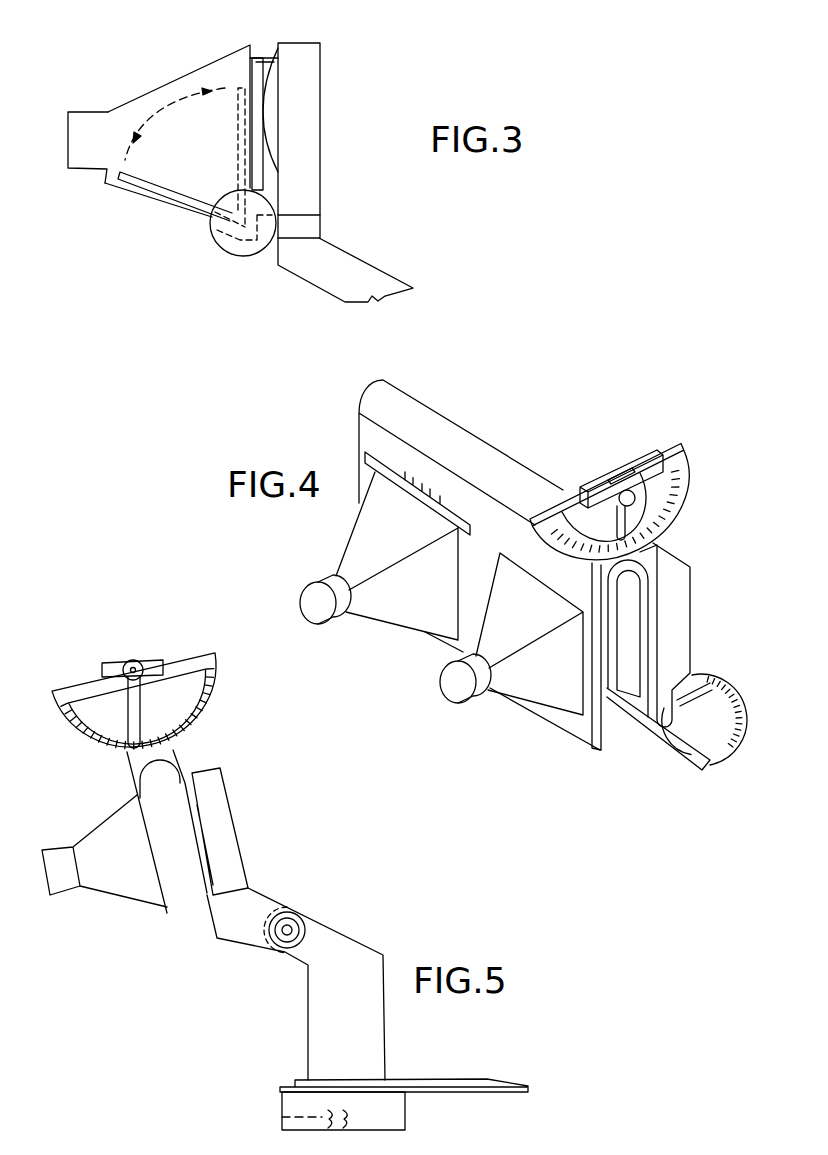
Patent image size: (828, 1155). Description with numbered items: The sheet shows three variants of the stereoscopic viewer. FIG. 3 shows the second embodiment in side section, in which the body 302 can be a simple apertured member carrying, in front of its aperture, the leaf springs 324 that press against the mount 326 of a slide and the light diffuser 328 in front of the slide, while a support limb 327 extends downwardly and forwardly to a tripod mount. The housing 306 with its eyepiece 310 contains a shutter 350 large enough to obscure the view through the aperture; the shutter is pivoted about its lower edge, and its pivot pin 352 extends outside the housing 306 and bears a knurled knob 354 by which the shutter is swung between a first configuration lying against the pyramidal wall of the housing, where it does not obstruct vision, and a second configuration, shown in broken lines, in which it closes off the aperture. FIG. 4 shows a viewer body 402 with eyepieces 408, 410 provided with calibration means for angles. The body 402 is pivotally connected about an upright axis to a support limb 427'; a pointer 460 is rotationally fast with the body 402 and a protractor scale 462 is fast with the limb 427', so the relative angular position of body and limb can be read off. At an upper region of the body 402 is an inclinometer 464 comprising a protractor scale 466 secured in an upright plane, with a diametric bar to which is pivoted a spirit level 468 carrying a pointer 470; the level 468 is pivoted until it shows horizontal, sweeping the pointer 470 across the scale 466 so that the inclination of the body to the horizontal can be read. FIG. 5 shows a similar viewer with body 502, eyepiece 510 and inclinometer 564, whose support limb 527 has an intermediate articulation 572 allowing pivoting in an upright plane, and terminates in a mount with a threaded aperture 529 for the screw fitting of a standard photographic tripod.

In FIG. 3, the body 302 is at (256, 56).
In FIG. 3, the housing 306 is at (150, 93).
In FIG. 3, the eyepiece 310 is at (85, 170).
In FIG. 3, the leaf springs 324 is at (265, 148).
In FIG. 3, the mount 326 is at (260, 57).
In FIG. 3, the support limb 327 is at (377, 282).
In FIG. 3, the light diffuser 328 is at (320, 78).
In FIG. 3, the shutter 350 is at (148, 187).
In FIG. 3, the pivot pin 352 is at (246, 225).
In FIG. 3, the knurled knob 354 is at (213, 238).
In FIG. 4, the viewer body 402 is at (372, 384).
In FIG. 4, the eyepiece 408 is at (303, 590).
In FIG. 4, the eyepiece 410 is at (473, 700).
In FIG. 4, the support limb 427' is at (718, 741).
In FIG. 4, the pointer 460 is at (674, 748).
In FIG. 4, the protractor scale 462 is at (692, 758).
In FIG. 4, the inclinometer 464 is at (680, 442).
In FIG. 4, the protractor scale 466 is at (665, 513).
In FIG. 4, the spirit level 468 is at (598, 490).
In FIG. 4, the pointer 470 is at (556, 507).
In FIG. 5, the body 502 is at (167, 907).
In FIG. 5, the eyepiece 510 is at (65, 893).
In FIG. 5, the support limb 527 is at (281, 959).
In FIG. 5, the threaded aperture 529 is at (282, 1117).
In FIG. 5, the inclinometer 564 is at (210, 723).
In FIG. 5, the intermediate articulation 572 is at (290, 925).